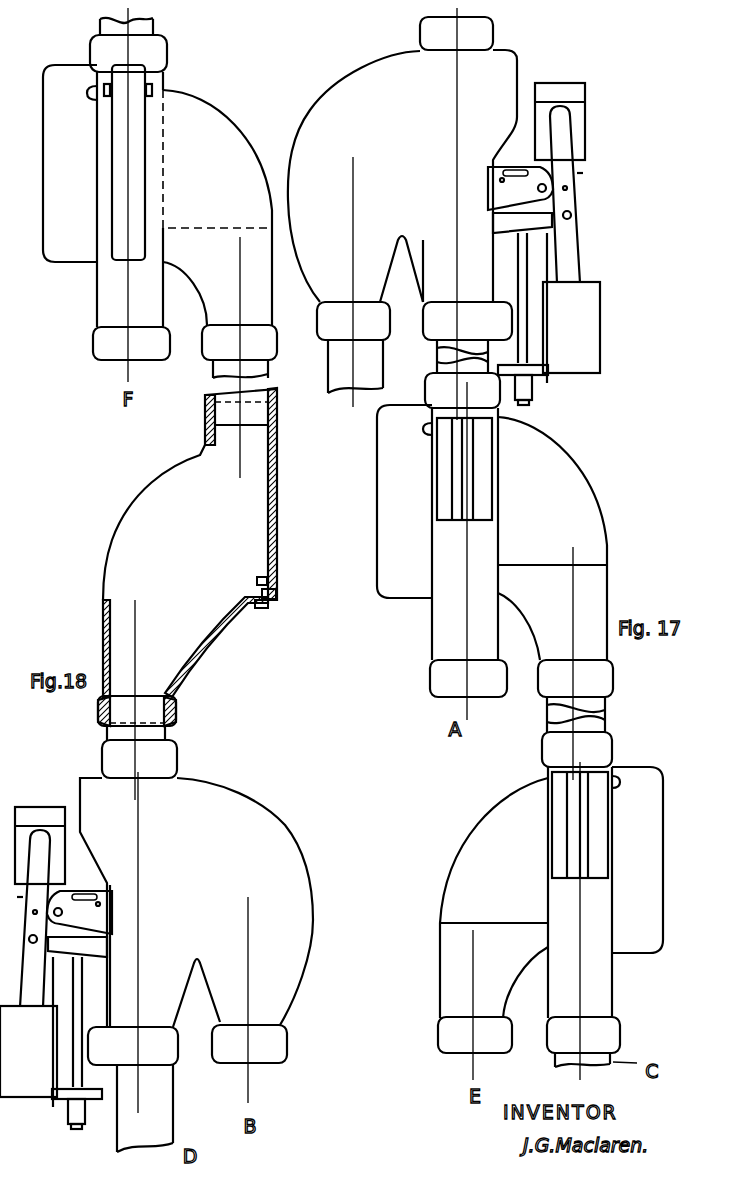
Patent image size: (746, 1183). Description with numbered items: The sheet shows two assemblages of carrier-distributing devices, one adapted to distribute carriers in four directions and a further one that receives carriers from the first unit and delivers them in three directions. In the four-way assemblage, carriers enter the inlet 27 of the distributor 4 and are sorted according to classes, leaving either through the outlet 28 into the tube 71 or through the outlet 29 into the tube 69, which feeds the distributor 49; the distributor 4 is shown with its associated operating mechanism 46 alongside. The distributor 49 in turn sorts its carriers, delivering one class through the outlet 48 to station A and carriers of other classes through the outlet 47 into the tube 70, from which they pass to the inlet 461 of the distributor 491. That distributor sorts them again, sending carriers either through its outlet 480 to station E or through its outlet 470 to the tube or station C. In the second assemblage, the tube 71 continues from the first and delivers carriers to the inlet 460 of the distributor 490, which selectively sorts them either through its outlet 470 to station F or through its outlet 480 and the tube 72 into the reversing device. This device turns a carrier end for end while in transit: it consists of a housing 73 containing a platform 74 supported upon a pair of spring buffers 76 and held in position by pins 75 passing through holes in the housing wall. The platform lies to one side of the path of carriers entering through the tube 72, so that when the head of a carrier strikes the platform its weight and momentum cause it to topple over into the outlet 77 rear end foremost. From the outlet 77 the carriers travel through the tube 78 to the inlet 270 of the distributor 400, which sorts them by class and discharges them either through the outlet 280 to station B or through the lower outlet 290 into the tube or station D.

In FIG. 17, the distributor 4 is at (325, 88).
In FIG. 17, the inlet 27 is at (497, 35).
In FIG. 17, the outlet 28 is at (396, 318).
In FIG. 17, the outlet 29 is at (428, 332).
In FIG. 17, the operating lever mechanism 46 is at (503, 400).
In FIG. 17, the outlet 47 is at (615, 682).
In FIG. 17, the outlet 48 is at (430, 673).
In FIG. 17, the distributor 49 is at (567, 463).
In FIG. 17, the tube 69 is at (437, 367).
In FIG. 17, the tube 70 is at (548, 708).
In FIG. 18, the tube 71 is at (100, 28).
In FIG. 17, the tube 71 is at (350, 392).
In FIG. 18, the tube 72 is at (215, 394).
In FIG. 18, the housing 73 is at (122, 518).
In FIG. 18, the platform 74 is at (257, 578).
In FIG. 18, the pins 75 is at (267, 608).
In FIG. 18, the spring buffers 76 is at (262, 591).
In FIG. 18, the outlet 77 is at (176, 701).
In FIG. 18, the tube 78 is at (165, 732).
In FIG. 18, the inlet 270 is at (102, 750).
In FIG. 18, the outlet 280 is at (288, 1042).
In FIG. 18, the collar 290 is at (180, 1060).
In FIG. 18, the distributor 400 is at (275, 820).
In FIG. 18, the inlet 460 is at (167, 59).
In FIG. 17, the inlet 461 is at (540, 757).
In FIG. 18, the outlet 470 is at (93, 343).
In FIG. 17, the outlet 470 is at (620, 1025).
In FIG. 18, the outlet 480 is at (277, 347).
In FIG. 17, the outlet 480 is at (438, 1032).
In FIG. 18, the distributor 490 is at (208, 107).
In FIG. 17, the distributor 491 is at (663, 795).